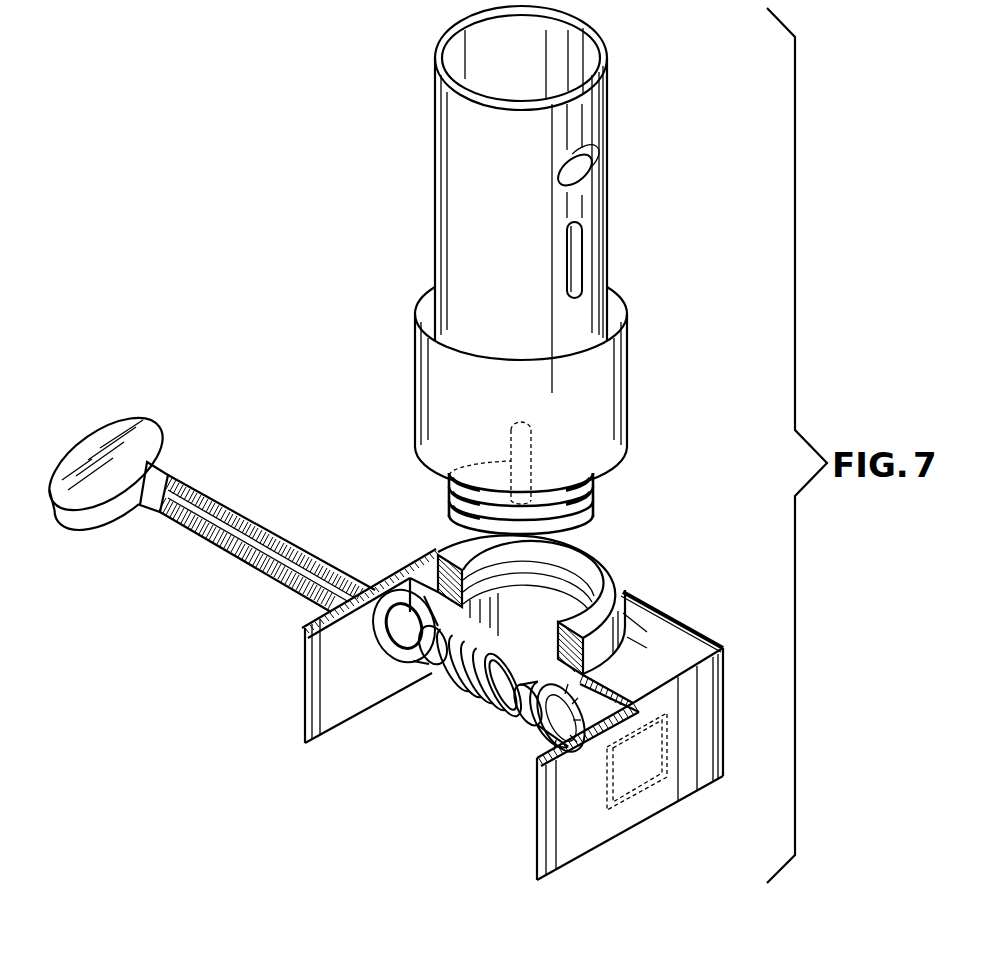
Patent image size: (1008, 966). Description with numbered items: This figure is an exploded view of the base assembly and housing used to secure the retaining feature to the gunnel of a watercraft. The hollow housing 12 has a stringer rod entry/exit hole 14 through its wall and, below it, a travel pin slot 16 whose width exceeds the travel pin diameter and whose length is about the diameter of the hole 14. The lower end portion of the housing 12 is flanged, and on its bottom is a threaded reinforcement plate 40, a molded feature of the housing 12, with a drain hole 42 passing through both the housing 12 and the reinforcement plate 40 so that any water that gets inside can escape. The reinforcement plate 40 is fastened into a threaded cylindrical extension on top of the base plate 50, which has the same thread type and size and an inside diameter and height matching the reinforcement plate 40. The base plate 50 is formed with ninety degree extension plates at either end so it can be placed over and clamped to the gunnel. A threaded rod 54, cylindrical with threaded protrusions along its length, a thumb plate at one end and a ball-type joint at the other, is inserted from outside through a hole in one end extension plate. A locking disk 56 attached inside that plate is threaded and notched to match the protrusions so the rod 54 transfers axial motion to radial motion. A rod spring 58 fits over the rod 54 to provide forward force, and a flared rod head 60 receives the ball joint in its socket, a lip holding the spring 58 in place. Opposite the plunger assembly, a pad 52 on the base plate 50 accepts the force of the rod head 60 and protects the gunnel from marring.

The housing 12 is at (433, 120).
The stringer rod entry/exit hole 14 is at (588, 173).
The travel pin slot 16 is at (588, 249).
The reinforcement plate 40 is at (594, 489).
The drain hole 42 is at (449, 475).
The base plate 50 is at (650, 600).
The pad 52 is at (645, 791).
The threaded rod 54 is at (222, 548).
The locking disk 56 is at (394, 666).
The rod spring 58 is at (465, 700).
The rod head 60 is at (530, 738).